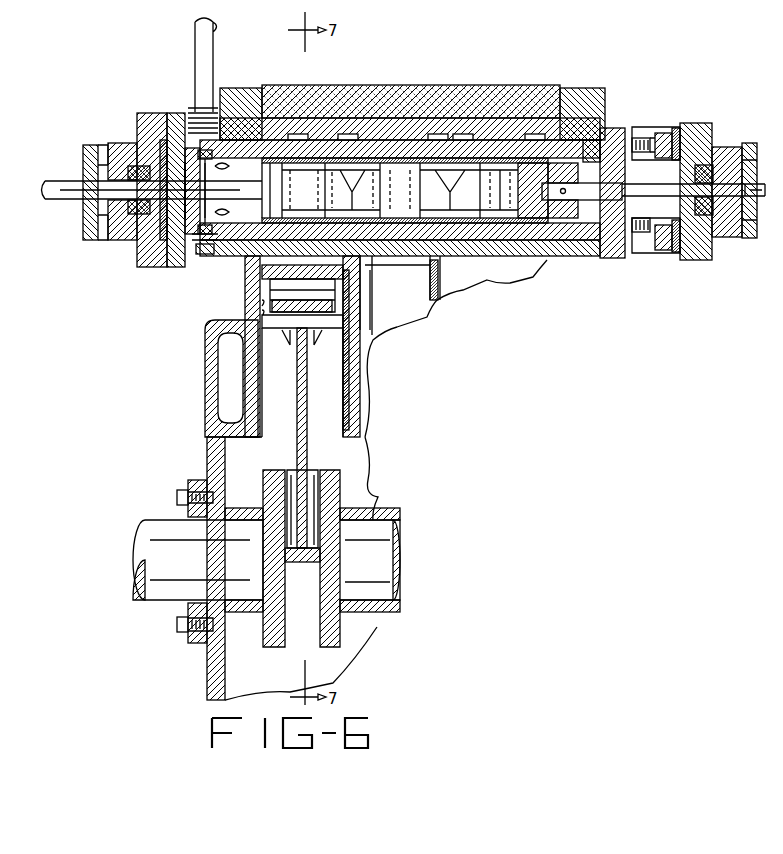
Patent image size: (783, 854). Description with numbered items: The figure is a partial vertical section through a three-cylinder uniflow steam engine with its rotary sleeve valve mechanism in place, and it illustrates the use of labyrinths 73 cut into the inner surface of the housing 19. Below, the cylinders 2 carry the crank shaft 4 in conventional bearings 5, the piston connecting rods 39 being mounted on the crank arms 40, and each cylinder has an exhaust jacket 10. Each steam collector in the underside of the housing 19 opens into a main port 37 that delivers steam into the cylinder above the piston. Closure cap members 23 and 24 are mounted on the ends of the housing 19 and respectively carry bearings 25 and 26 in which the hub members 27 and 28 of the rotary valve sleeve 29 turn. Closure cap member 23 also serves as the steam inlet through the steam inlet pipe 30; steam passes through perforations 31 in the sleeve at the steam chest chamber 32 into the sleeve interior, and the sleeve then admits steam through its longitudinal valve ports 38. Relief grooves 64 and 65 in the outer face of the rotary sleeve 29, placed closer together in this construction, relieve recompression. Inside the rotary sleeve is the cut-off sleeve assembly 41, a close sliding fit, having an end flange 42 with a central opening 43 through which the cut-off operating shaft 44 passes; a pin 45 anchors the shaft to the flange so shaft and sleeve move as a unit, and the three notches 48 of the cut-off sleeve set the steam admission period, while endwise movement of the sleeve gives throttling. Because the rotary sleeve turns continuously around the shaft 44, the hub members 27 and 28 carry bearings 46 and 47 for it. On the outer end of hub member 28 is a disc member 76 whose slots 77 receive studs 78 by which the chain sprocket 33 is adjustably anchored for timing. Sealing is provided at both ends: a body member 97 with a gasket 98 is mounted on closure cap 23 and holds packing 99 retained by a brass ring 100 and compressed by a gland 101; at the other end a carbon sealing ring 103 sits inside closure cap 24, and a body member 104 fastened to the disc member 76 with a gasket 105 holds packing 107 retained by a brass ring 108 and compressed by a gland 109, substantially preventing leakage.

The cylinders 2 is at (243, 293).
The crank shaft 4 is at (153, 532).
The bearings 5 is at (252, 613).
The exhaust jacket 10 is at (227, 378).
The housing 19 is at (430, 126).
The closure cap member 23 is at (230, 92).
The closure cap member 24 is at (588, 132).
The bearing 25 is at (187, 160).
The bearing 26 is at (605, 232).
The hub member 27 is at (153, 264).
The hub member 28 is at (592, 158).
The rotary valve sleeve 29 is at (542, 148).
The steam inlet pipe 30 is at (211, 50).
The perforations 31 is at (231, 223).
The steam chest chamber 32 is at (200, 250).
The chain sprocket 33 is at (650, 127).
The main port 37 is at (415, 246).
The longitudinal valve port 38 is at (306, 210).
The piston connecting rods 39 is at (296, 445).
The crank arms 40 is at (328, 487).
The cut-off sleeve assembly 41 is at (462, 140).
The end flange 42 is at (556, 202).
The central opening 43 is at (542, 179).
The cut-off operating shaft 44 is at (66, 182).
The pin 45 is at (567, 191).
The bearing 46 is at (177, 167).
The bearing 47 is at (743, 152).
The notches 48 is at (420, 198).
The relief groove 64 is at (311, 142).
The relief groove 65 is at (385, 146).
The labyrinths 73 is at (437, 140).
The disc member 76 is at (676, 254).
The slots 77 is at (672, 132).
The studs 78 is at (645, 250).
The body member 97 is at (160, 142).
The gasket 98 is at (187, 177).
The packing 99 is at (139, 214).
The brass ring 100 is at (102, 208).
The gland 101 is at (83, 153).
The carbon sealing ring 103 is at (606, 145).
The body member 104 is at (712, 128).
The gasket 105 is at (688, 128).
The packing 107 is at (700, 222).
The brass ring 108 is at (712, 212).
The gland 109 is at (758, 245).